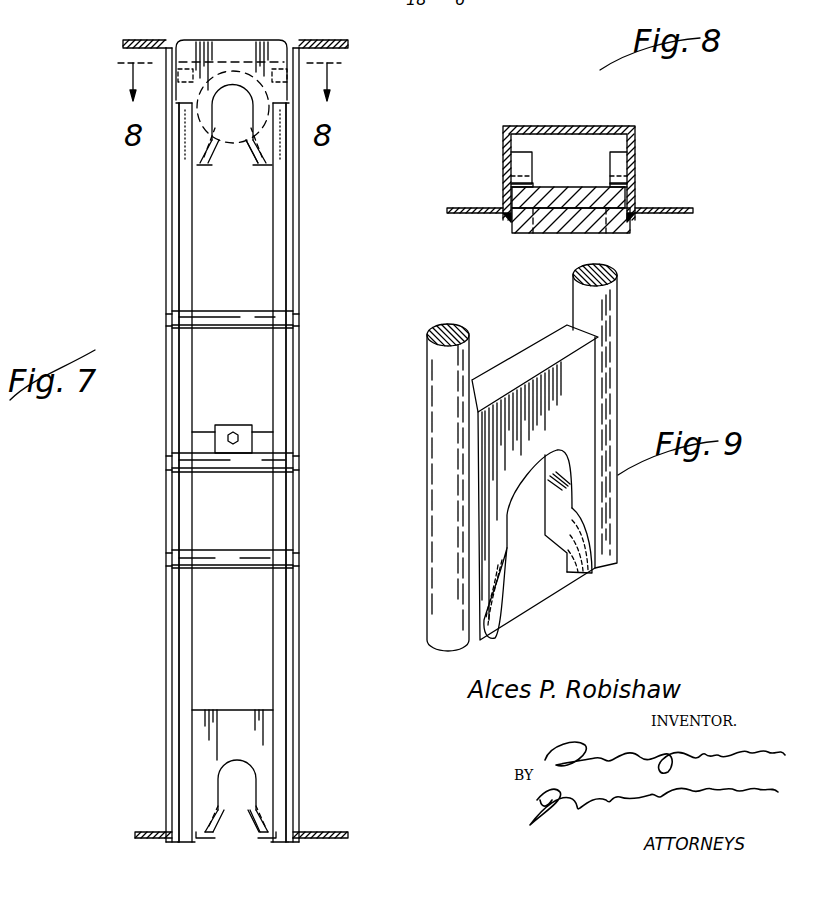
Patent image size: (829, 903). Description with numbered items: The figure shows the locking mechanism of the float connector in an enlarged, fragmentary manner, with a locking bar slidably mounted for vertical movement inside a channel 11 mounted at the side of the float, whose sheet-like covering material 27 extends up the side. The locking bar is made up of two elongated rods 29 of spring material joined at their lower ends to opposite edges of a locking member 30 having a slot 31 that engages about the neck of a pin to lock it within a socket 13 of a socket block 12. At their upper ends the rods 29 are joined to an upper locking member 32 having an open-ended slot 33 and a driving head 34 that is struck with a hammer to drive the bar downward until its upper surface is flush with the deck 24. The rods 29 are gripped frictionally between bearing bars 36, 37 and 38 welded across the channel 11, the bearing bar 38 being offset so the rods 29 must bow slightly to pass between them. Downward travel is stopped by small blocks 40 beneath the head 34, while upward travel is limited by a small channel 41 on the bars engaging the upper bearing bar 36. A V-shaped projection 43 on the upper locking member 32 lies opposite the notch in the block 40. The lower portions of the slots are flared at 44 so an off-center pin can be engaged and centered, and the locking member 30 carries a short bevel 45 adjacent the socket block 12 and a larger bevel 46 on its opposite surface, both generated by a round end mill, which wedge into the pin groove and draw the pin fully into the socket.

In FIG. 7, the channel 11 is at (301, 226).
In FIG. 8, the channel 11 is at (636, 128).
In FIG. 8, the socket block 12 is at (631, 229).
In FIG. 8, the socket 13 is at (545, 230).
In FIG. 7, the deck 24 is at (333, 40).
In FIG. 8, the sheet-like covering material 27 is at (466, 208).
In FIG. 7, the elongated rod 29 is at (273, 263).
In FIG. 9, the elongated rod 29 is at (448, 324).
In FIG. 7, the locking member 30 is at (229, 712).
In FIG. 9, the locking member 30 is at (580, 368).
In FIG. 7, the slot 31 is at (226, 780).
In FIG. 9, the slot 31 is at (556, 487).
In FIG. 7, the upper locking member 32 is at (266, 138).
In FIG. 7, the open-ended slot 33 is at (232, 113).
In FIG. 7, the driving head 34 is at (222, 40).
In FIG. 8, the driving head 34 is at (616, 197).
In FIG. 7, the bearing bar 36 is at (229, 315).
In FIG. 7, the bearing bar 37 is at (229, 566).
In FIG. 7, the bearing bar 38 is at (229, 468).
In FIG. 8, the block 40 is at (614, 160).
In FIG. 7, the small channel 41 is at (245, 426).
In FIG. 8, the V-shaped projection 43 is at (531, 185).
In FIG. 7, the flared portion 44 is at (262, 160).
In FIG. 9, the flared portion 44 is at (560, 548).
In FIG. 7, the bevel 45 is at (268, 836).
In FIG. 9, the bevel 46 is at (577, 565).